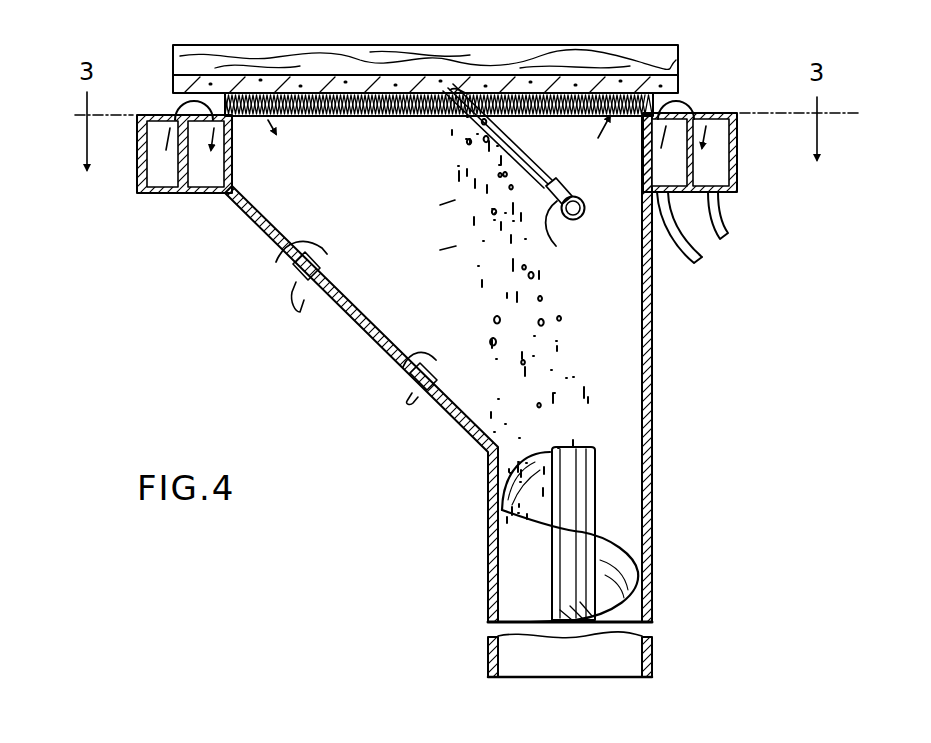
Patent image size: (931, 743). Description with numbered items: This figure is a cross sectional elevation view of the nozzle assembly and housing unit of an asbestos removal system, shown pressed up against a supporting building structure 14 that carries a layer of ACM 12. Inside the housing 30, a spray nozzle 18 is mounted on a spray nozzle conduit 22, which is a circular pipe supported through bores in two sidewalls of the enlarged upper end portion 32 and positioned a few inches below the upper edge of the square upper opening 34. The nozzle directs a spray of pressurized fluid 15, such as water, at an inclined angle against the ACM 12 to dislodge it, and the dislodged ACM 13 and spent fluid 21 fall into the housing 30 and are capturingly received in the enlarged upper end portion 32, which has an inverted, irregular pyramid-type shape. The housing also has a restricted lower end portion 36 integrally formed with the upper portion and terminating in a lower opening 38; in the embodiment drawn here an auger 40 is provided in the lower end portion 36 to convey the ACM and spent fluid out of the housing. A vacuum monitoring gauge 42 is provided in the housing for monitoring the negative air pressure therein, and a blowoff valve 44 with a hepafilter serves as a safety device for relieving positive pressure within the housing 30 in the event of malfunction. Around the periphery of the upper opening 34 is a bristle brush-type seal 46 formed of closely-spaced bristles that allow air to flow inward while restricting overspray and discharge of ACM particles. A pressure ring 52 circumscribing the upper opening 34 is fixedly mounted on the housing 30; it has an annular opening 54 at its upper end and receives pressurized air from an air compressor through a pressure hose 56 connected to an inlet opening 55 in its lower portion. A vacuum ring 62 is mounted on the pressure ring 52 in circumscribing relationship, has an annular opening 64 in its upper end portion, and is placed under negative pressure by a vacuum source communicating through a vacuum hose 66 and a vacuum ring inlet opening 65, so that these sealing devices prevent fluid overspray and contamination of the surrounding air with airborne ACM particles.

The ACM 12 is at (683, 81).
The dislodged ACM 13 is at (447, 240).
The supporting building structure 14 is at (683, 58).
The spray of pressurized fluid 15 is at (522, 150).
The spray nozzle 18 is at (559, 239).
The spent fluid 21 is at (433, 176).
The spray nozzle conduit 22 is at (588, 200).
The housing 30 is at (652, 316).
The enlarged upper end portion 32 is at (620, 268).
The upper opening 34 is at (313, 118).
The restricted lower end portion 36 is at (622, 460).
The lower opening 38 is at (623, 660).
The auger 40 is at (620, 570).
The vacuum monitoring gauge 42 is at (403, 368).
The blowoff valve 44 is at (290, 262).
The bristle brush-type seal 46 is at (362, 118).
The pressure ring 52 is at (680, 154).
The annular opening 54 is at (700, 97).
The inlet opening 55 is at (673, 186).
The pressure hose 56 is at (701, 259).
The vacuum ring 62 is at (737, 119).
The annular opening 64 is at (700, 113).
The vacuum ring inlet opening 65 is at (713, 181).
The vacuum hose 66 is at (724, 236).